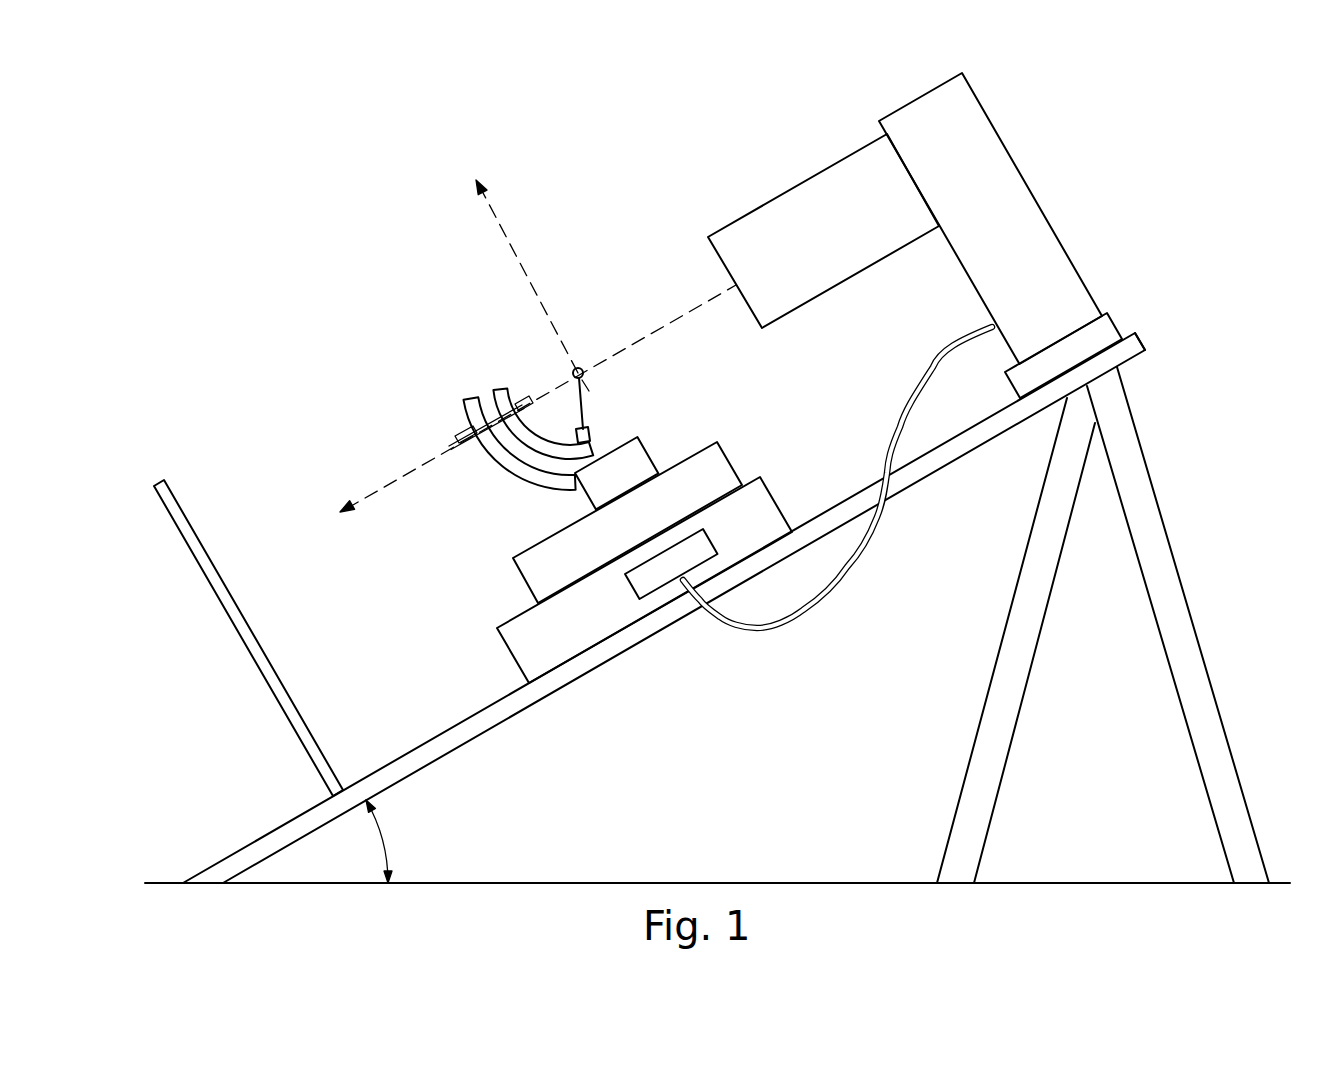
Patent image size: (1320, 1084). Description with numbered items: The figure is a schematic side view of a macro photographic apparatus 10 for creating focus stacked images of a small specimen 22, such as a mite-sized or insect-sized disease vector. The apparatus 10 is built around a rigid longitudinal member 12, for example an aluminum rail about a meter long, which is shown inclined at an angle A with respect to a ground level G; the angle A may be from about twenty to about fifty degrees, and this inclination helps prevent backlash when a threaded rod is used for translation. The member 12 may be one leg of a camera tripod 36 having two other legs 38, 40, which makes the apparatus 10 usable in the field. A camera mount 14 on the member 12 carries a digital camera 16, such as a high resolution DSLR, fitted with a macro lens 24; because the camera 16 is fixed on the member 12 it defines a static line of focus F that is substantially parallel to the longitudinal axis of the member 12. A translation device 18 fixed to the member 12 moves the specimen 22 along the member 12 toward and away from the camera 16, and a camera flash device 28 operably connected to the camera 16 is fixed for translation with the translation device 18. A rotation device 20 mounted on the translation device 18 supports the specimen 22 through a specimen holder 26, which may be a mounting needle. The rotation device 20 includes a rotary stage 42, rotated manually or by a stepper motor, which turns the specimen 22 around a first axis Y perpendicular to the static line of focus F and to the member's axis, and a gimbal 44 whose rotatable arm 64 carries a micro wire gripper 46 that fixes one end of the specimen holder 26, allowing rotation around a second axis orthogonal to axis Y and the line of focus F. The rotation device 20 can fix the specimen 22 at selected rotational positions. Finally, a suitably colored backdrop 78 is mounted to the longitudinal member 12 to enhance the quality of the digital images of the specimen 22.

The macro photographic apparatus 10 is at (344, 230).
The rigid longitudinal member 12 is at (218, 858).
The camera mount 14 is at (1110, 331).
The digital camera 16 is at (1045, 222).
The translation device 18 is at (524, 667).
The rotation device 20 is at (487, 637).
The specimen 22 is at (580, 366).
The macro lens 24 is at (788, 212).
The specimen holder 26 is at (588, 415).
The camera flash device 28 is at (717, 552).
The camera tripod 36 is at (1132, 367).
The tripod leg 38 is at (1022, 705).
The tripod leg 40 is at (1206, 665).
The rotary stage 42 is at (723, 476).
The gimbal 44 is at (467, 400).
The micro wire gripper 46 is at (592, 438).
The arm 64 is at (495, 387).
The backdrop 78 is at (181, 506).
The angle A is at (388, 840).
The static line of focus F is at (684, 312).
The ground level G is at (290, 885).
The first axis Y is at (527, 263).